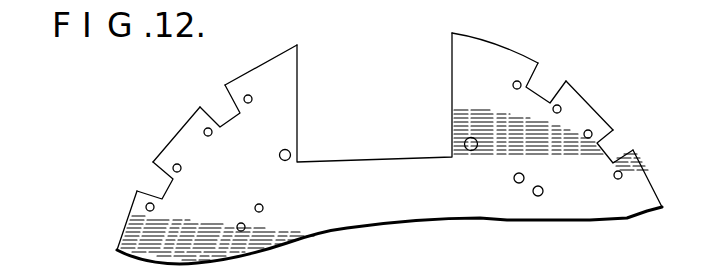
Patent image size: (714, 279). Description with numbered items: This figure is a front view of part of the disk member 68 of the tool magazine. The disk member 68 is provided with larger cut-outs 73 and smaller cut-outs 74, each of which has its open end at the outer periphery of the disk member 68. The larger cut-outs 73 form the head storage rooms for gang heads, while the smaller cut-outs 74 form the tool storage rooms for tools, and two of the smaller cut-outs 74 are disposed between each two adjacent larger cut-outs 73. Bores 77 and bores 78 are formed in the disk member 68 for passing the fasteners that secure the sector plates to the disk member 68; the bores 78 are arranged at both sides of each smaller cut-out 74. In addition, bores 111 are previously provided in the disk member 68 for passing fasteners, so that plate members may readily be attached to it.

The disk member 68 is at (595, 192).
The larger cut-out 73 is at (298, 110).
The smaller cut-out 74 is at (207, 105).
The bore 77 is at (260, 212).
The bore 78 is at (248, 95).
The bore 111 is at (287, 160).